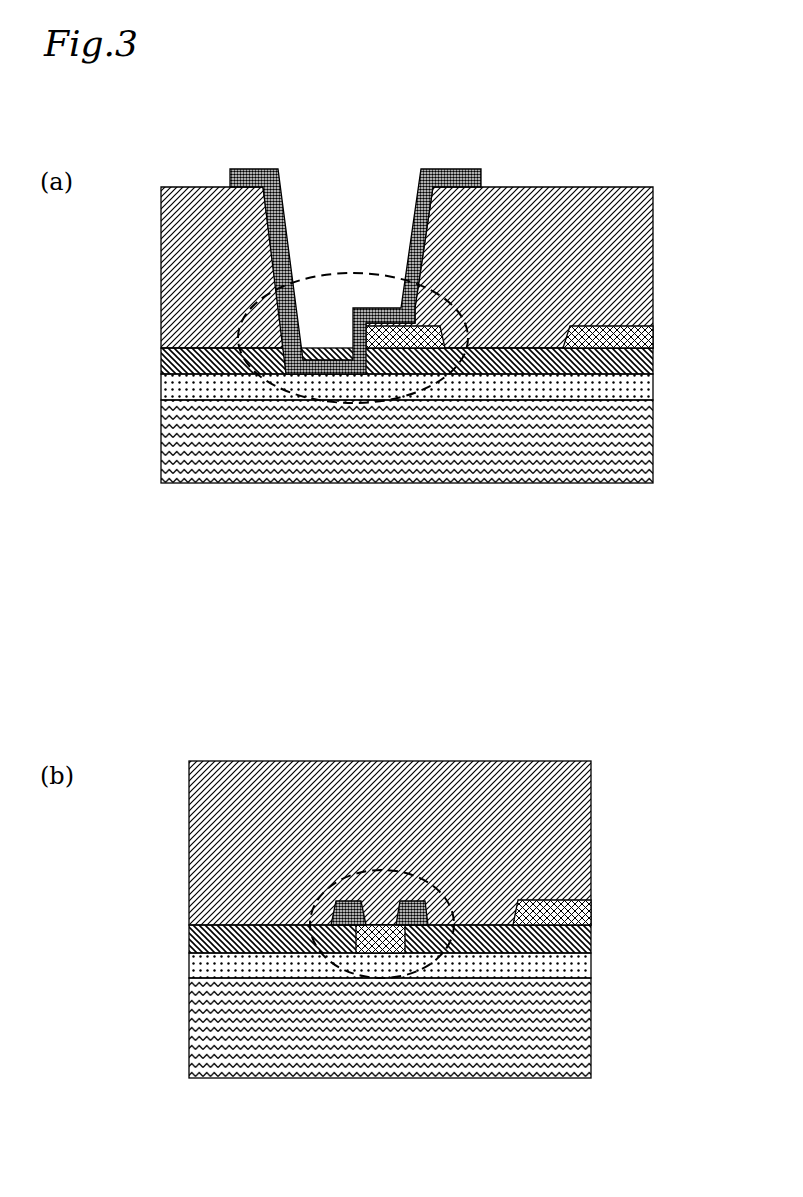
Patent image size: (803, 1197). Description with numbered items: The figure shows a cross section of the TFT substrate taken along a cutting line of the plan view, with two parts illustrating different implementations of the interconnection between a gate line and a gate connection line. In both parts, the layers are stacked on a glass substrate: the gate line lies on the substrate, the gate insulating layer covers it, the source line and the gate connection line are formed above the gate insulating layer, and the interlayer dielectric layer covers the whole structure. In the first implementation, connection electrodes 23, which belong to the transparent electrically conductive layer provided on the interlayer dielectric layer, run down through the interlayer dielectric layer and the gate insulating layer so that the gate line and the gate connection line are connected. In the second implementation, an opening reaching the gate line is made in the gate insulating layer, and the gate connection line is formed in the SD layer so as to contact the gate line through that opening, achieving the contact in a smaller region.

The connection electrode 23 is at (455, 162).